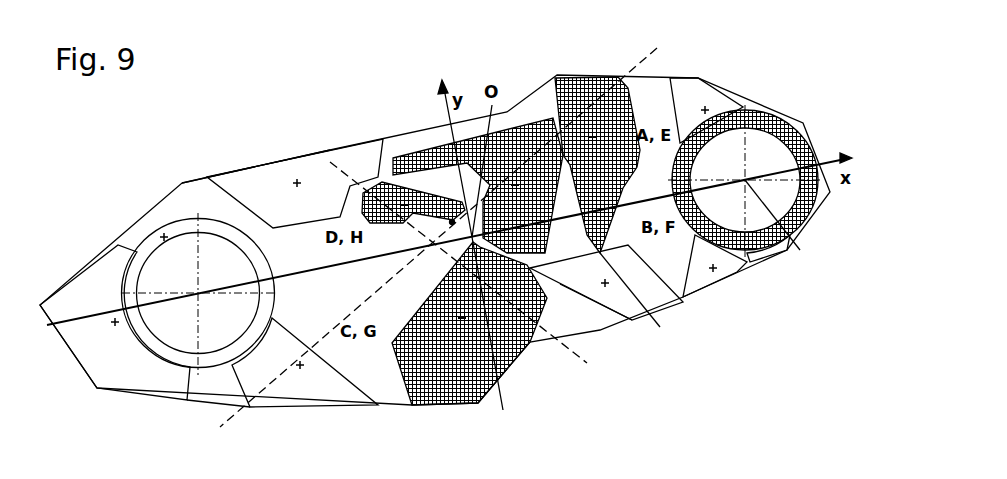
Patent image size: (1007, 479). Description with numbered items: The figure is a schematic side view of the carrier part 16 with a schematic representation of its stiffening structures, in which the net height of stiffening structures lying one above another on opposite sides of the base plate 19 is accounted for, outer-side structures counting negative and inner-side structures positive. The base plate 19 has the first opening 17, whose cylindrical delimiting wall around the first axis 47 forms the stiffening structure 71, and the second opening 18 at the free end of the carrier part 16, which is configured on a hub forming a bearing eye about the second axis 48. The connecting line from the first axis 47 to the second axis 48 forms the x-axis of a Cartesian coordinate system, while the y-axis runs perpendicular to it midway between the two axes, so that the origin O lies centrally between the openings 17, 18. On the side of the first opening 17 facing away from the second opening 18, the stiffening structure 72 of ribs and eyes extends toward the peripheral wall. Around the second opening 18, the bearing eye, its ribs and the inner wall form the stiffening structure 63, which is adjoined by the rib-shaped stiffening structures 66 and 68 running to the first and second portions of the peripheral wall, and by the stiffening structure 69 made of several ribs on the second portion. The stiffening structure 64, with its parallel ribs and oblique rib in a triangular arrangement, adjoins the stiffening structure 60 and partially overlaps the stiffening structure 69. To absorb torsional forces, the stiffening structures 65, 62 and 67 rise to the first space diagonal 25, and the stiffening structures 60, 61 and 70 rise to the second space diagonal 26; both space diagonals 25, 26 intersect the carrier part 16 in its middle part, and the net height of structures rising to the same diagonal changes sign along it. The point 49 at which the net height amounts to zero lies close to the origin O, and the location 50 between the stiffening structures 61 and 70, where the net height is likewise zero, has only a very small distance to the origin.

The carrier part 16 is at (690, 72).
The first opening 17 is at (158, 260).
The second opening 18 is at (765, 148).
The base plate 19 is at (225, 207).
The first space diagonal 25 is at (587, 363).
The second space diagonal 26 is at (654, 50).
The first axis 47 is at (198, 293).
The second axis 48 is at (785, 228).
The point 49 is at (432, 243).
The location 50 is at (452, 222).
The stiffening structure 60 is at (570, 83).
The stiffening structure 61 is at (530, 150).
The stiffening structure 62 is at (378, 180).
The stiffening structure 63 is at (760, 243).
The stiffening structure 64 is at (606, 297).
The stiffening structure 65 is at (448, 390).
The stiffening structure 66 is at (710, 92).
The stiffening structure 67 is at (253, 173).
The stiffening structure 68 is at (703, 282).
The stiffening structure 69 is at (611, 303).
The stiffening structure 70 is at (332, 398).
The stiffening structure 71 is at (210, 363).
The stiffening structure 72 is at (127, 382).